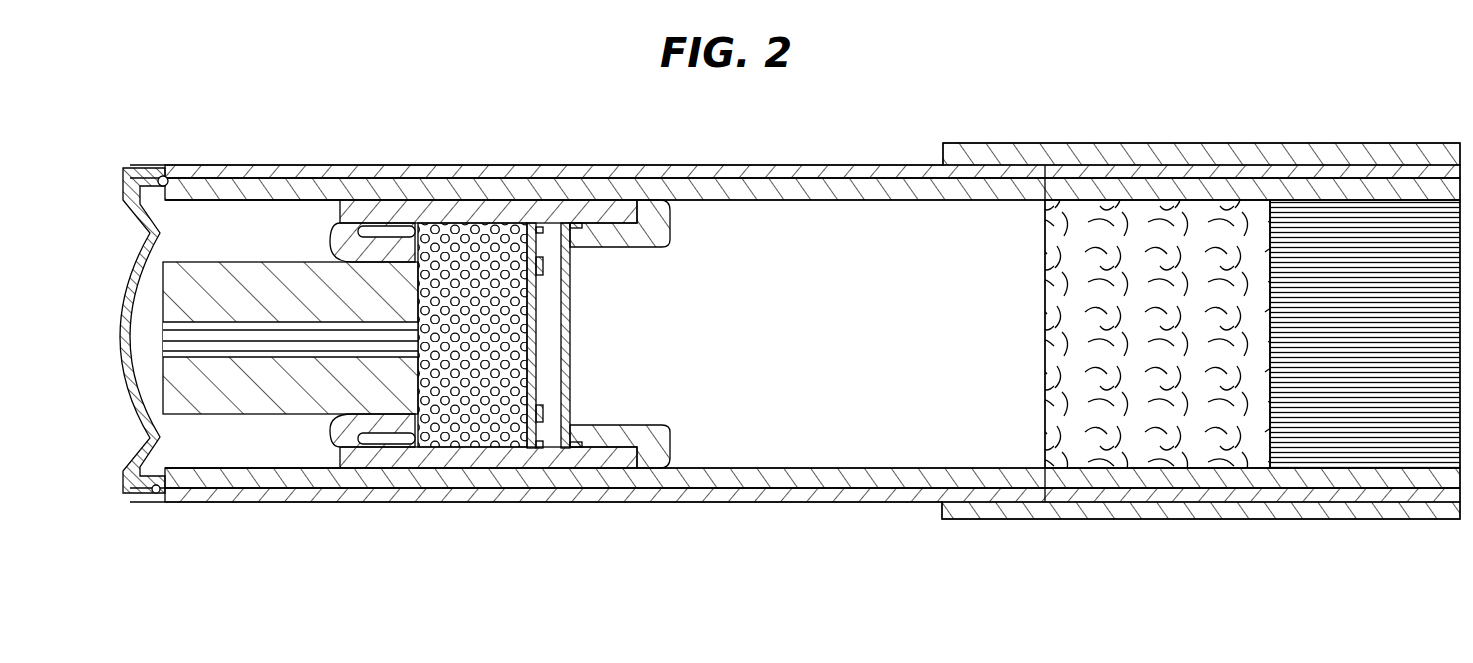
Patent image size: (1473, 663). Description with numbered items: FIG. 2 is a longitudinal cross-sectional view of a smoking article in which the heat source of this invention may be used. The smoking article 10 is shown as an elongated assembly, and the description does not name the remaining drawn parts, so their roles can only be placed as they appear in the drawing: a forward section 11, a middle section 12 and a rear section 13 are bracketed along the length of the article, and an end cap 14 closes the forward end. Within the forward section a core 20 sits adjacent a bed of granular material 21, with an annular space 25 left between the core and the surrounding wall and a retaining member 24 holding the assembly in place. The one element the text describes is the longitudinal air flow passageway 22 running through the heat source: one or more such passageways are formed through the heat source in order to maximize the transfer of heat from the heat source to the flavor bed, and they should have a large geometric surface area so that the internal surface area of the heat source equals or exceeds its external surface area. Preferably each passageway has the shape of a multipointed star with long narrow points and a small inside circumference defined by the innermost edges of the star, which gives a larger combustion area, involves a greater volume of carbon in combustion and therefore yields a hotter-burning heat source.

The cartridge assembly 10 is at (893, 137).
The forward cap section 11 is at (385, 362).
The casing body section 12 is at (583, 580).
The payload section 13 is at (1468, 580).
The end cap 14 is at (194, 172).
The core body 20 is at (290, 345).
The granular propellant charge 21 is at (470, 223).
The longitudinal air flow passageway 22 is at (210, 333).
The retaining ring 24 is at (343, 223).
The annular space 25 is at (272, 222).